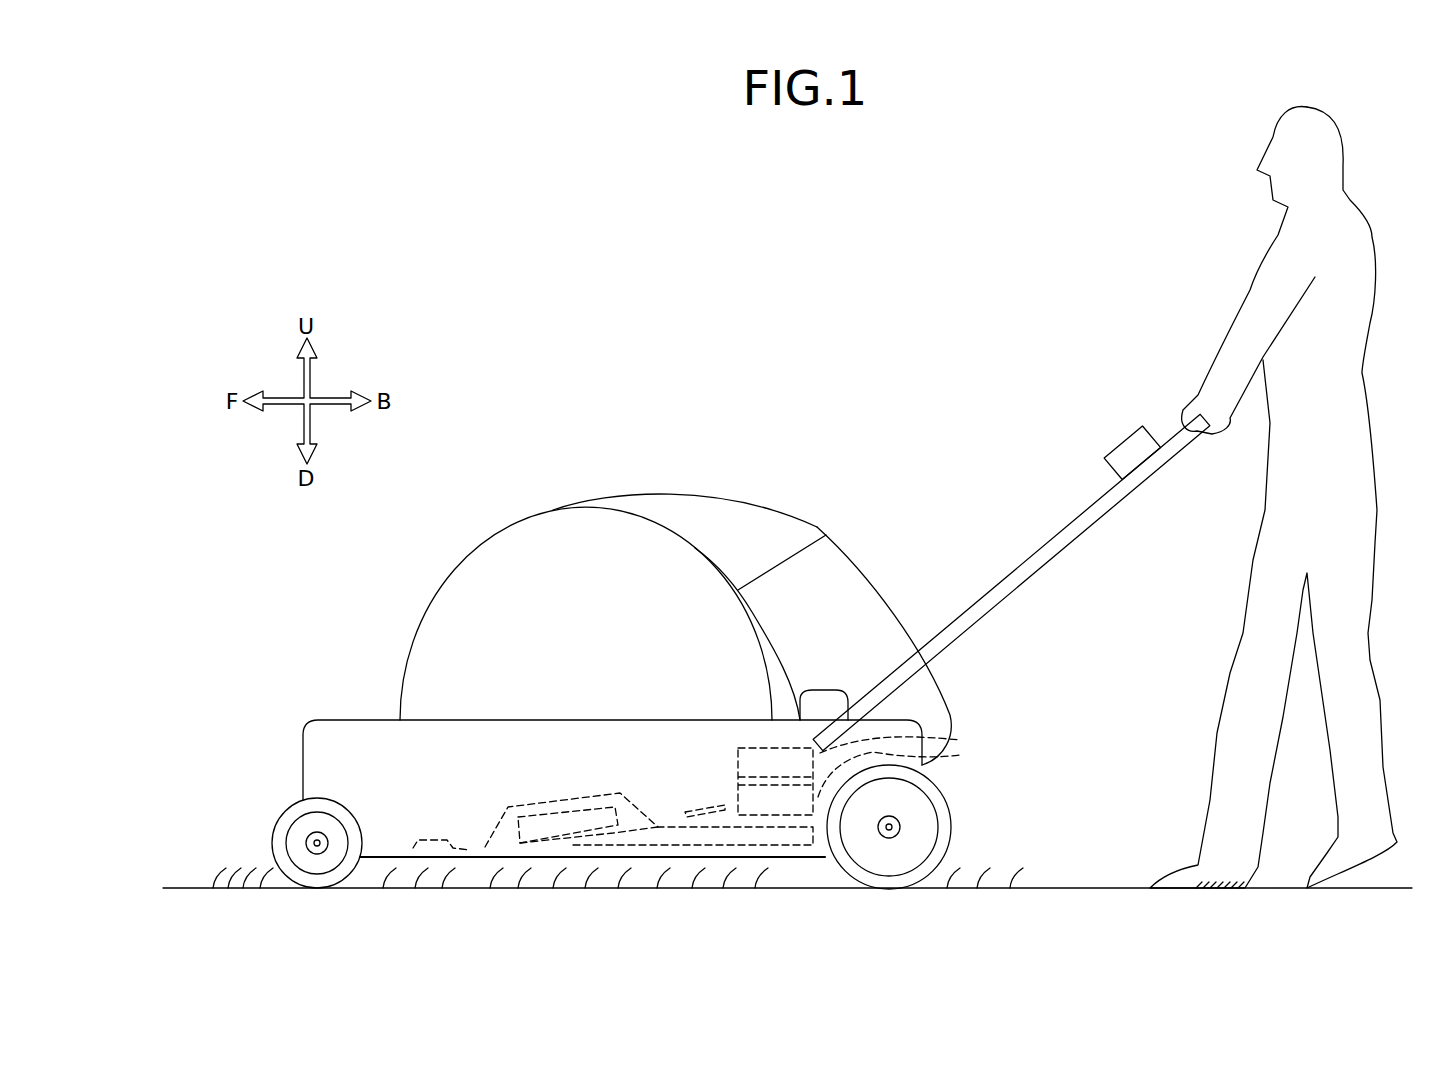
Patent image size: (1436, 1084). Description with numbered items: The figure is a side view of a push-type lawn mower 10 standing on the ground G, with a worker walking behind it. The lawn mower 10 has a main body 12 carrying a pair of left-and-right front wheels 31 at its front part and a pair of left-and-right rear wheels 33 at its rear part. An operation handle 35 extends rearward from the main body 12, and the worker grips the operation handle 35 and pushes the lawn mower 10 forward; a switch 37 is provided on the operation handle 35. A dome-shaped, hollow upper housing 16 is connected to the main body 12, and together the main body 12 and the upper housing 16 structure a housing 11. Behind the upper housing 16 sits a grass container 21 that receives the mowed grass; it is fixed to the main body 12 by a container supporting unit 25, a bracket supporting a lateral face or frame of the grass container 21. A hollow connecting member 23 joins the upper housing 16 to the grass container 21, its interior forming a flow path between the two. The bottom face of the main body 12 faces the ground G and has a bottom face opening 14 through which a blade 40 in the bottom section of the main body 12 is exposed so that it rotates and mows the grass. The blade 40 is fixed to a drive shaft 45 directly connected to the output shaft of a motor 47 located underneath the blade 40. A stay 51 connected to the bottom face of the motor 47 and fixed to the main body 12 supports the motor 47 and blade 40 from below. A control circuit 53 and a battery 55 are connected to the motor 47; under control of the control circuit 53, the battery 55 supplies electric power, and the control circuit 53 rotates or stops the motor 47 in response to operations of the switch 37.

The lawn mower 10 is at (506, 386).
The housing 11 is at (358, 585).
The main body 12 is at (362, 720).
The bottom face opening 14 is at (478, 862).
The upper housing 16 is at (405, 648).
The grass container 21 is at (845, 545).
The connecting member 23 is at (728, 492).
The container supporting unit 25 is at (822, 690).
The front wheels 31 is at (285, 812).
The rear wheels 33 is at (955, 822).
The operation handle 35 is at (1020, 566).
The switch 37 is at (1108, 456).
The blade 40 is at (478, 848).
The drive shaft 45 is at (562, 798).
The motor 47 is at (545, 843).
The stay 51 is at (798, 848).
The control circuit 53 is at (960, 755).
The battery 55 is at (960, 740).
The ground G is at (185, 886).